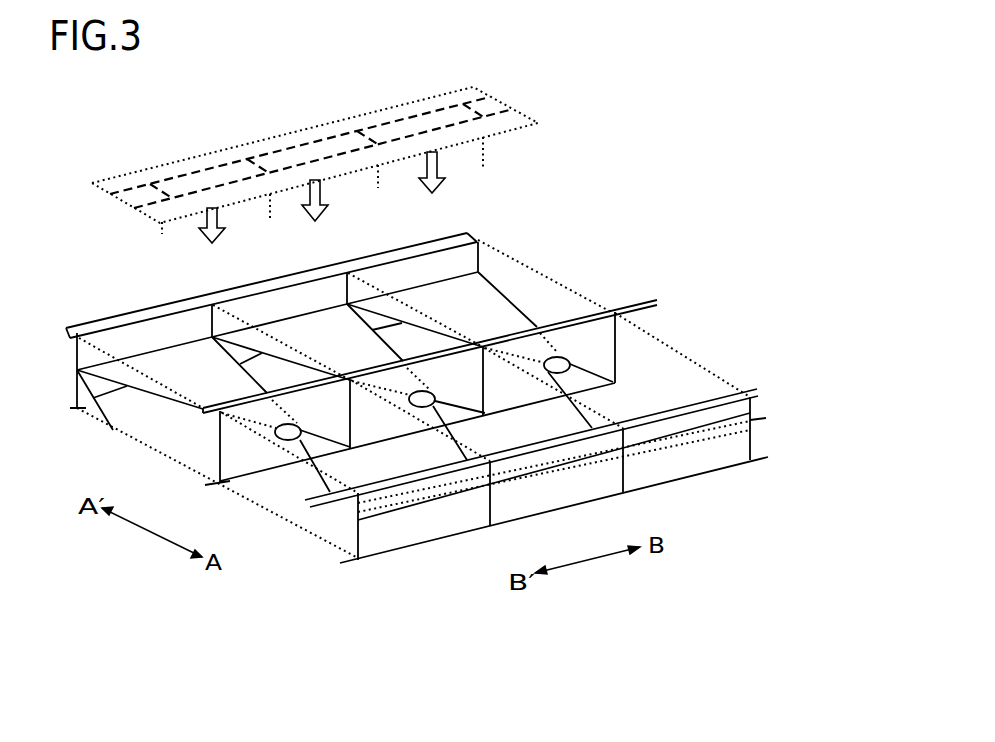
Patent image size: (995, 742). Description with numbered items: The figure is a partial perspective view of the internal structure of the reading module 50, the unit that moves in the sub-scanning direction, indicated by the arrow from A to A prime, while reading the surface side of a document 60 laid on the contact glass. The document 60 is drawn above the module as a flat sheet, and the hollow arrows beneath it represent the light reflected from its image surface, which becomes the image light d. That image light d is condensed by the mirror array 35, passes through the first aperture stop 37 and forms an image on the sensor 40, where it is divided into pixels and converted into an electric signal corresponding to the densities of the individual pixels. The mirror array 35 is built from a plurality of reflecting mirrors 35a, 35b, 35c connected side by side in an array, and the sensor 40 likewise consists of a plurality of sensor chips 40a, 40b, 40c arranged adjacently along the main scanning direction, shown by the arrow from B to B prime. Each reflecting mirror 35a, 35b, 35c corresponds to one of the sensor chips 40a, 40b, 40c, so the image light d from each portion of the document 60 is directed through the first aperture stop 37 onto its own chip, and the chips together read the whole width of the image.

The reading module 50 is at (662, 219).
The document 60 is at (528, 117).
The mirror array 35 is at (447, 235).
The reflecting mirror 35a is at (127, 331).
The reflecting mirror 35b is at (268, 305).
The reflecting mirror 35c is at (417, 262).
The first aperture stop 37 is at (566, 357).
The sensor 40 is at (542, 448).
The sensor chip 40a is at (427, 524).
The sensor chip 40b is at (563, 493).
The sensor chip 40c is at (700, 462).
The image light d is at (143, 385).